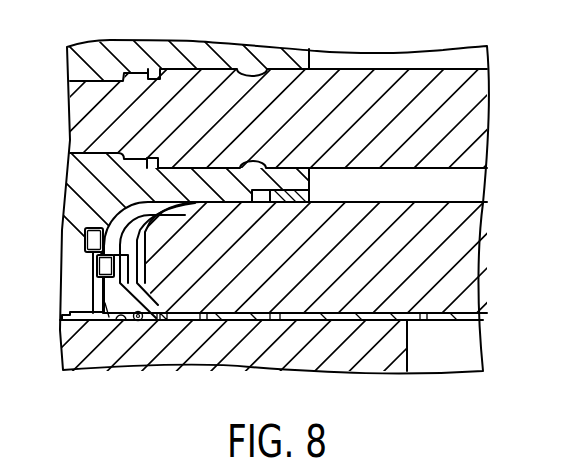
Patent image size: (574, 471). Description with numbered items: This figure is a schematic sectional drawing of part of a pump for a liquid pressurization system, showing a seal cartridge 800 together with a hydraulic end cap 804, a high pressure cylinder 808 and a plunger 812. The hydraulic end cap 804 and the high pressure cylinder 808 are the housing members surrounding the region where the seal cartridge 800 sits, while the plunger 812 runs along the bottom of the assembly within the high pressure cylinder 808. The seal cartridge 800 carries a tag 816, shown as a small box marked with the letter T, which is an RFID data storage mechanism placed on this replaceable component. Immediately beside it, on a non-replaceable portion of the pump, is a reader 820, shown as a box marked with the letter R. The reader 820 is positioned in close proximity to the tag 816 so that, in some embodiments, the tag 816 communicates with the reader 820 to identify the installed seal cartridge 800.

The seal cartridge 800 is at (110, 303).
The hydraulic end cap 804 is at (93, 62).
The high pressure cylinder 808 is at (470, 265).
The plunger 812 is at (342, 358).
The tag 816 is at (99, 270).
The reader 820 is at (87, 236).